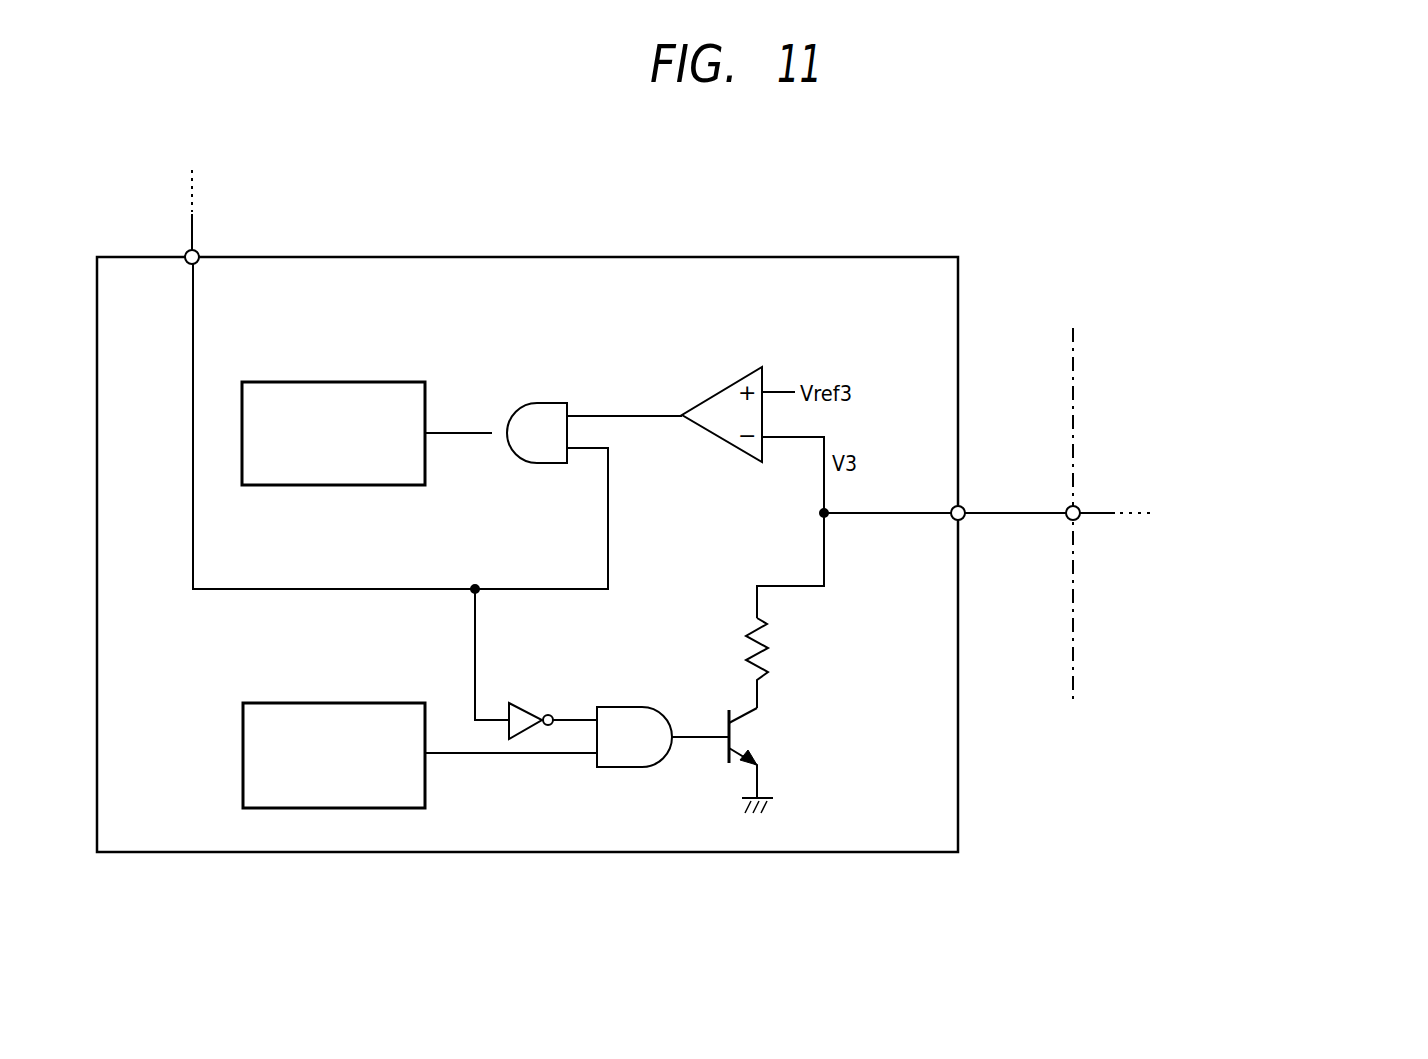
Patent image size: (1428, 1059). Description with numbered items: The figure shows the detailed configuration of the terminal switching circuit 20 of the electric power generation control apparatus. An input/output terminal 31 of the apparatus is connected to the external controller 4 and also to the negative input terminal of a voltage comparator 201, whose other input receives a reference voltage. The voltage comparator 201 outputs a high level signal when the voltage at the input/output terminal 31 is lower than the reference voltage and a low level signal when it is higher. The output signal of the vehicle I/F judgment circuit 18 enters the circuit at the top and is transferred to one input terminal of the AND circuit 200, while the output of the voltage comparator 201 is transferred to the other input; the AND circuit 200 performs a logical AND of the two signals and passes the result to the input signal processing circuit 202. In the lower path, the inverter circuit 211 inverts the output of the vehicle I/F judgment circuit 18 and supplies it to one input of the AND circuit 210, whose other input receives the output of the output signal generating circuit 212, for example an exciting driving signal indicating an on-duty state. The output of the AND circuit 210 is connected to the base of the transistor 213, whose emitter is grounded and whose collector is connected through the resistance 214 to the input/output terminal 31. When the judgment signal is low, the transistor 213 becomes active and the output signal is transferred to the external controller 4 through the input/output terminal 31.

The terminal switching circuit 20 is at (892, 236).
The vehicle I/F judgment circuit 18 is at (193, 189).
The input signal processing circuit 202 is at (373, 382).
The AND circuit 200 is at (545, 403).
The voltage comparator 201 is at (722, 387).
The resistance 214 is at (768, 631).
The transistor 213 is at (752, 730).
The output signal generating circuit 212 is at (373, 703).
The inverter circuit 211 is at (522, 705).
The AND circuit 210 is at (628, 707).
The input/output terminal 31 is at (1082, 520).
The external controller 4 is at (1240, 515).